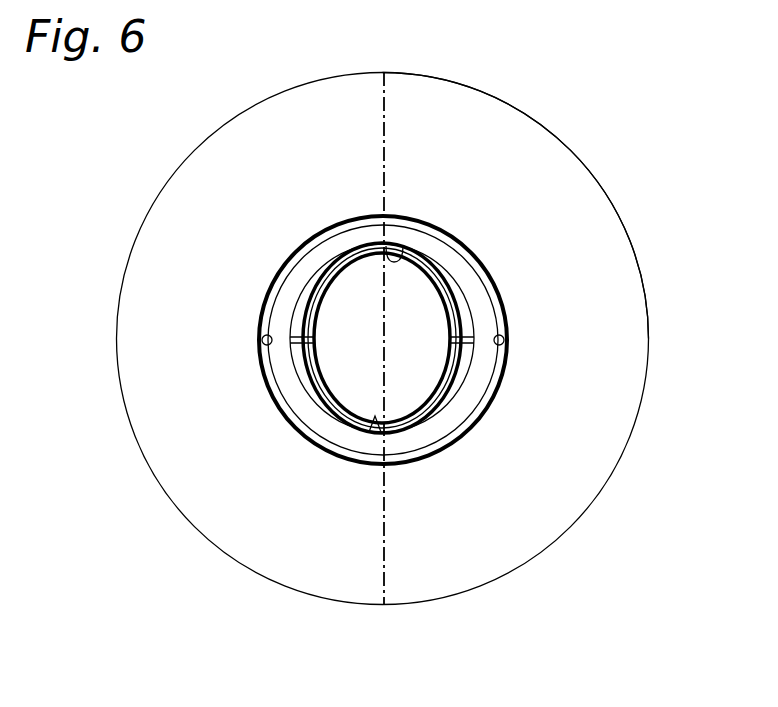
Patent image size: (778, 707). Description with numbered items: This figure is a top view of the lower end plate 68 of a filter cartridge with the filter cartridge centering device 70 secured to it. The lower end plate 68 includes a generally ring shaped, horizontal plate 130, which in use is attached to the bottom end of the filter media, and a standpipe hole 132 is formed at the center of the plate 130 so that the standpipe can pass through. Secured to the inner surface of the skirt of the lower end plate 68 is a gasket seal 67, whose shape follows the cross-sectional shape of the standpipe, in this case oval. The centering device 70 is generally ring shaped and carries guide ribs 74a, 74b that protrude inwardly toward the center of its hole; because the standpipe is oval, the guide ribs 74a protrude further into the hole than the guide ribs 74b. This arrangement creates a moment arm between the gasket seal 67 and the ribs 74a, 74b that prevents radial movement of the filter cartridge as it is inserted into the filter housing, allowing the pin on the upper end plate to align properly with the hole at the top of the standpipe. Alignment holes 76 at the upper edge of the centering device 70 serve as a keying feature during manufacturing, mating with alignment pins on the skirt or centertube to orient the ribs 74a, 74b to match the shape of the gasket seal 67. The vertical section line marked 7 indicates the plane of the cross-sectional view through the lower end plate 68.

The section line 7- 7 is at (384, 72).
The lower end plate 68 is at (590, 128).
The horizontal plate 130 is at (602, 232).
The centering device 70 is at (296, 212).
The alignment holes 76 is at (261, 334).
The gasket seal 67 is at (340, 388).
The guide ribs 74a is at (292, 350).
The guide ribs 74b is at (405, 250).
The standpipe hole 132 is at (398, 390).